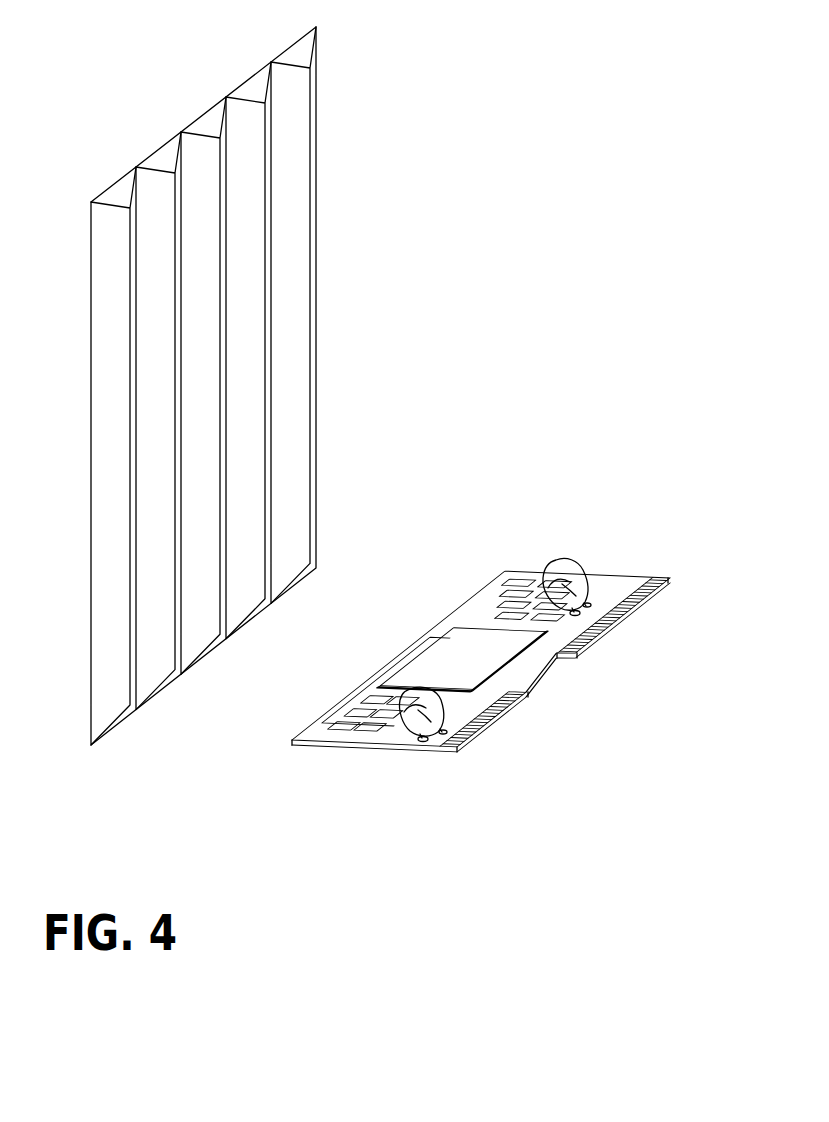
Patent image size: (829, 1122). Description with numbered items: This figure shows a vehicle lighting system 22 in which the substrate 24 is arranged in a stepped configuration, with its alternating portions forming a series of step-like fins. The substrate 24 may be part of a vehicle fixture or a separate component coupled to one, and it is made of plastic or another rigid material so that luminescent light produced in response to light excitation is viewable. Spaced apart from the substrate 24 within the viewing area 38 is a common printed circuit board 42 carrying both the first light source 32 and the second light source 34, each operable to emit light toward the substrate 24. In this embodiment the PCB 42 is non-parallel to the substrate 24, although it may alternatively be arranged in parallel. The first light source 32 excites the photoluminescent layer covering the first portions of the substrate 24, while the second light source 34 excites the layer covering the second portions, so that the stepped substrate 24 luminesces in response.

The vehicle lighting system 22 is at (480, 157).
The substrate 24 is at (127, 162).
The viewing area 38 is at (759, 365).
The first light source 32 is at (580, 577).
The second light source 34 is at (428, 700).
The common printed circuit board 42 is at (525, 675).